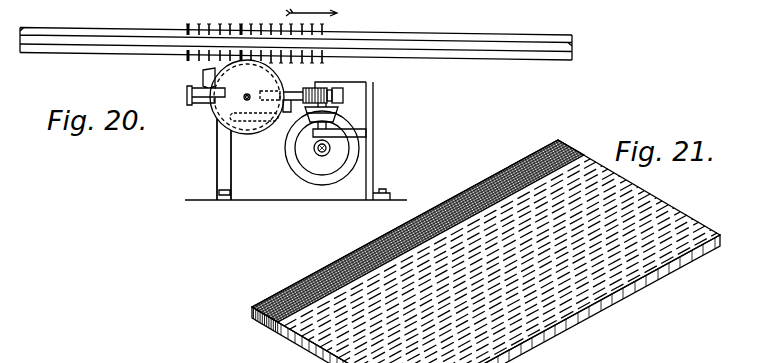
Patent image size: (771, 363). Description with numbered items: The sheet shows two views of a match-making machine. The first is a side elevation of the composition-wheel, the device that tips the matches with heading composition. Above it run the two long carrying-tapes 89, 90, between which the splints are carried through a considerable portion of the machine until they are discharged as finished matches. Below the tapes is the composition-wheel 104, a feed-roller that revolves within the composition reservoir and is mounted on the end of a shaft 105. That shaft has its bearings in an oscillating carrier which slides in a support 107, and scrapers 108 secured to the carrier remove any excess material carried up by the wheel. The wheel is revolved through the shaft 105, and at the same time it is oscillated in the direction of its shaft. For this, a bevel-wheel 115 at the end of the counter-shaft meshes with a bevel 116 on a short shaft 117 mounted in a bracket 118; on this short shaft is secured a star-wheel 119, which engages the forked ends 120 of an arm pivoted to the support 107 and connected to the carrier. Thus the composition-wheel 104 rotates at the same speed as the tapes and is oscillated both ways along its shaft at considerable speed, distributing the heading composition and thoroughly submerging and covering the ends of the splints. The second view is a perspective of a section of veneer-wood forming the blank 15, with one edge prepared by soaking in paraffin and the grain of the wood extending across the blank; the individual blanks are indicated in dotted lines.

In FIG. 20, the carrying-tape 89 is at (63, 29).
In FIG. 20, the carrying-tape 90 is at (122, 37).
In FIG. 20, the composition-wheel 104 is at (247, 97).
In FIG. 20, the shaft 105 is at (247, 100).
In FIG. 20, the support 107 is at (223, 144).
In FIG. 20, the scraper 108 is at (203, 77).
In FIG. 20, the bevel-wheel 115 is at (359, 148).
In FIG. 20, the bevel 116 is at (340, 113).
In FIG. 20, the short shaft 117 is at (340, 129).
In FIG. 20, the bracket 118 is at (345, 82).
In FIG. 20, the star-wheel 119 is at (343, 93).
In FIG. 20, the forked ends 120 is at (314, 90).
In FIG. 21, the blank 15 is at (486, 251).